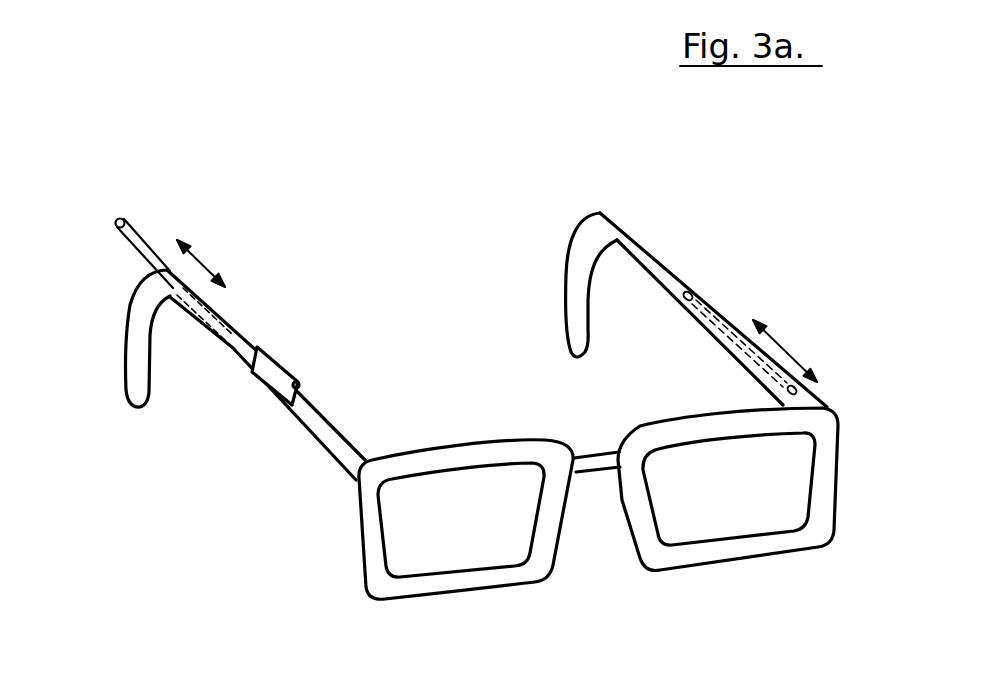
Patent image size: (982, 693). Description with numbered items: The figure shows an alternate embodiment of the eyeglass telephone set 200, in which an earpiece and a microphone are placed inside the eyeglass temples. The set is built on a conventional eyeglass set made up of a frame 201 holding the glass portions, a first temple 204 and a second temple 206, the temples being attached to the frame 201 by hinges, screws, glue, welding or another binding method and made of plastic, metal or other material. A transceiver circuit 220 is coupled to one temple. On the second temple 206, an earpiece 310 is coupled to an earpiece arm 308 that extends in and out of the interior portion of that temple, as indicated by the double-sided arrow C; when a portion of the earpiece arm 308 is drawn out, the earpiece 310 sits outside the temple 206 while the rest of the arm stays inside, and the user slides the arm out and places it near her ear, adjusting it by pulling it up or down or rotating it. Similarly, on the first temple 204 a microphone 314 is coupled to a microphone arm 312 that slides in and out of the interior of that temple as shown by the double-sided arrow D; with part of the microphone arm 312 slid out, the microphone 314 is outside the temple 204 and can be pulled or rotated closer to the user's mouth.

The eyeglass telephone set 200 is at (462, 147).
The frame 201 is at (467, 598).
The first temple 204 is at (735, 316).
The second temple 206 is at (210, 337).
The transceiver circuit 220 is at (283, 362).
The earpiece arm 308 is at (138, 261).
The earpiece 310 is at (161, 204).
The microphone arm 312 is at (725, 338).
The microphone 314 is at (812, 392).
The double-sided arrow C is at (204, 256).
The double-sided arrow D is at (792, 351).